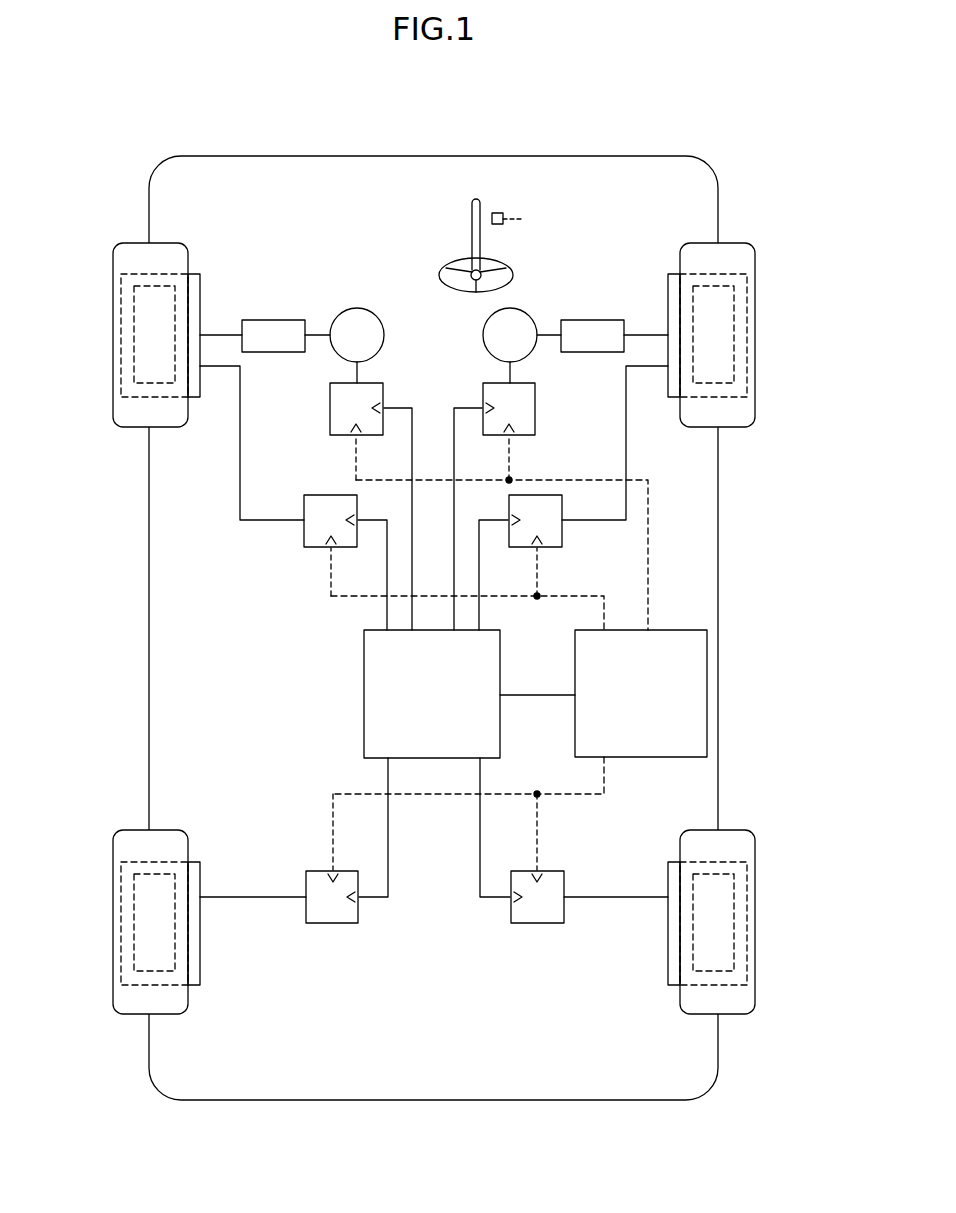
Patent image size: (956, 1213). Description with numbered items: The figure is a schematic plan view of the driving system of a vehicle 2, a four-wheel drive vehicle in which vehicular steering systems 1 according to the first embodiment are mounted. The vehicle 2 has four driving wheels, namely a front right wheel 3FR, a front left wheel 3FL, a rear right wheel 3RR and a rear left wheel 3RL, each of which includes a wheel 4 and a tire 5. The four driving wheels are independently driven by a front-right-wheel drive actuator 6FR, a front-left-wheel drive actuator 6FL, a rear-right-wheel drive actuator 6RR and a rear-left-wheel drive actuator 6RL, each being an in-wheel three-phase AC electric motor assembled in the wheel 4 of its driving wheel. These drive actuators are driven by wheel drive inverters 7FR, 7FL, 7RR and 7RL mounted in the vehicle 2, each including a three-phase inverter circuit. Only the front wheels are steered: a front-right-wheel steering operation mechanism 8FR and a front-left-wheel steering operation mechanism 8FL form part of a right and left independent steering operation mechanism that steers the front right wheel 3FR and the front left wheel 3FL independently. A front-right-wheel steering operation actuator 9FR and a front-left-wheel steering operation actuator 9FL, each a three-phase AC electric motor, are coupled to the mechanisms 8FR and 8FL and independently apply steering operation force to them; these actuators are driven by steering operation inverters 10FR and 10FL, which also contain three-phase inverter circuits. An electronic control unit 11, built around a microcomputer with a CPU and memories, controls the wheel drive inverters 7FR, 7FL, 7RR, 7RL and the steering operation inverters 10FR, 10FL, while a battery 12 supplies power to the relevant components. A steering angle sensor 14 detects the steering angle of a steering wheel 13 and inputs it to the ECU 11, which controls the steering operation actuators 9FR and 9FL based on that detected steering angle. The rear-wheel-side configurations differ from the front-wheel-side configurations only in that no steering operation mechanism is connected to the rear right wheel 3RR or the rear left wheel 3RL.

The vehicular steering system 1 is at (265, 310).
The vehicle 2 is at (447, 1151).
The front left wheel 3FL is at (125, 278).
The front right wheel 3FR is at (740, 277).
The rear left wheel 3RL is at (130, 865).
The rear right wheel 3RR is at (742, 863).
The wheel 4 is at (114, 292).
The tire 5 is at (137, 250).
The front-left-wheel drive actuator 6FL is at (112, 335).
The front-right-wheel drive actuator 6FR is at (723, 372).
The rear-left-wheel drive actuator 6RL is at (117, 923).
The rear-right-wheel drive actuator 6RR is at (725, 956).
The wheel drive inverter 7FL is at (305, 530).
The wheel drive inverter 7FR is at (556, 530).
The wheel drive inverter 7RL is at (333, 925).
The wheel drive inverter 7RR is at (537, 925).
The front-left-wheel steering operation mechanism 8FL is at (274, 355).
The front-right-wheel steering operation mechanism 8FR is at (593, 355).
The front-left-wheel steering operation actuator 9FL is at (358, 308).
The front-right-wheel steering operation actuator 9FR is at (483, 337).
The steering operation inverter 10FL is at (330, 428).
The steering operation inverter 10FR is at (535, 420).
The electronic control unit (ECU) 11 is at (375, 718).
The battery 12 is at (650, 758).
The steering wheel 13 is at (513, 270).
The steering angle sensor 14 is at (498, 211).